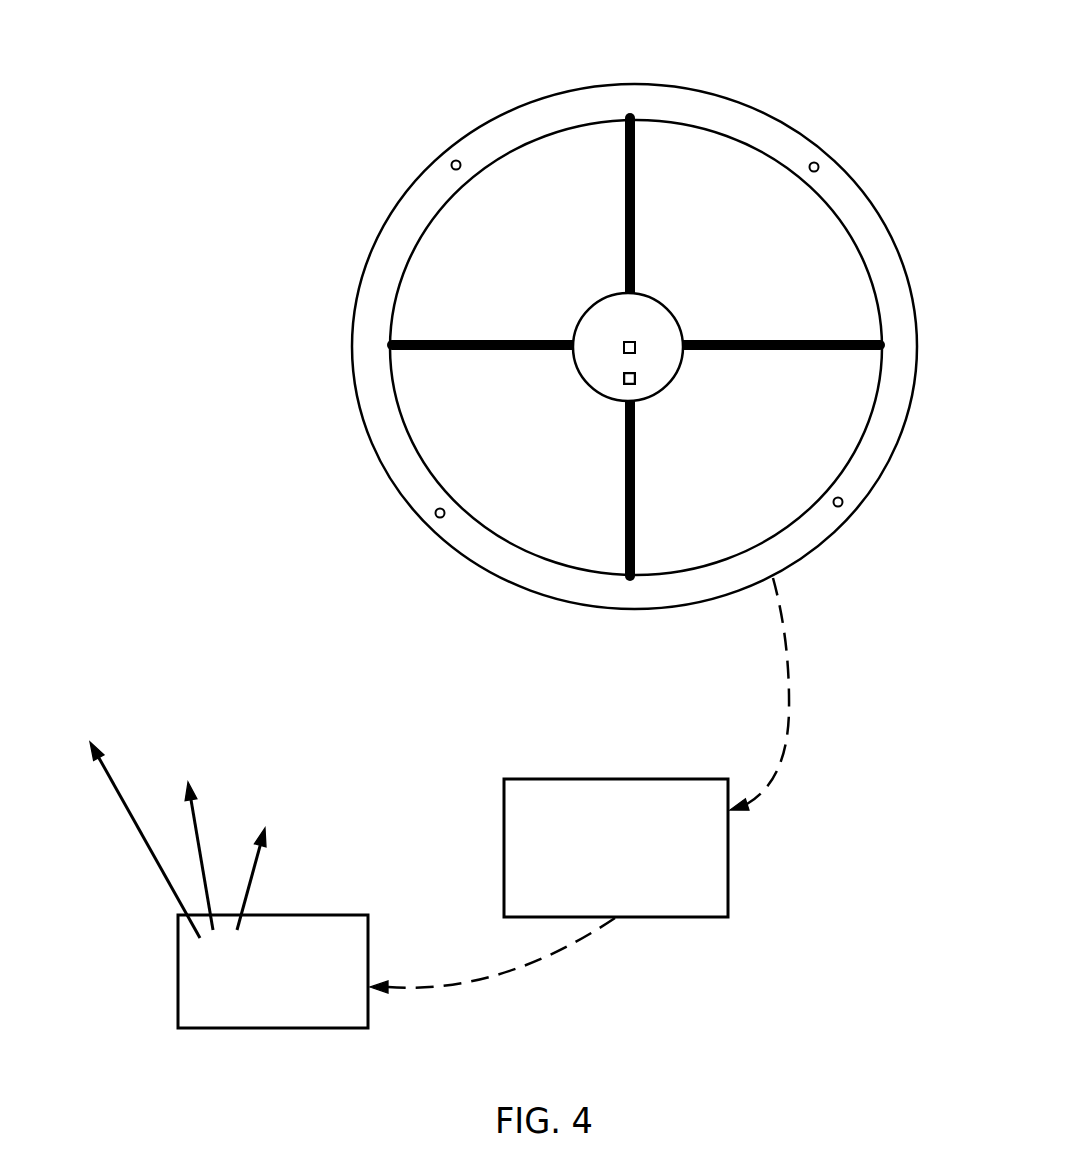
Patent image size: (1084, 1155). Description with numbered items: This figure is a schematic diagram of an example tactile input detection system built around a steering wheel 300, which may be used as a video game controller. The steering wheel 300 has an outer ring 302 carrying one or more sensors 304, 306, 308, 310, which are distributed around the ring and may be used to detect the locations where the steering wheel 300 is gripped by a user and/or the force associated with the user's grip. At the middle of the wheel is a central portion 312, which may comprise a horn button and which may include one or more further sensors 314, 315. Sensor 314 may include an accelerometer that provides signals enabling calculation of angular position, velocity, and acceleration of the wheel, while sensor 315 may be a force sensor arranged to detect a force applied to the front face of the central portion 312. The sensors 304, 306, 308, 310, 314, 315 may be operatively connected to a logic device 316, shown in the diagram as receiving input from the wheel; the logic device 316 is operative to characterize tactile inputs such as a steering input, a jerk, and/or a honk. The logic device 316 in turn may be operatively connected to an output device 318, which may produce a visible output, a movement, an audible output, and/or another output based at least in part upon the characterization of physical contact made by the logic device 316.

The steering wheel 300 is at (270, 107).
The outer ring 302 is at (375, 292).
The sensor 304 is at (453, 159).
The sensor 306 is at (815, 161).
The sensor 308 is at (841, 508).
The sensor 310 is at (437, 519).
The central portion 312 is at (607, 382).
The sensor 314 is at (631, 386).
The sensor 315 is at (636, 346).
The logic device 316 is at (518, 880).
The output device 318 is at (255, 930).